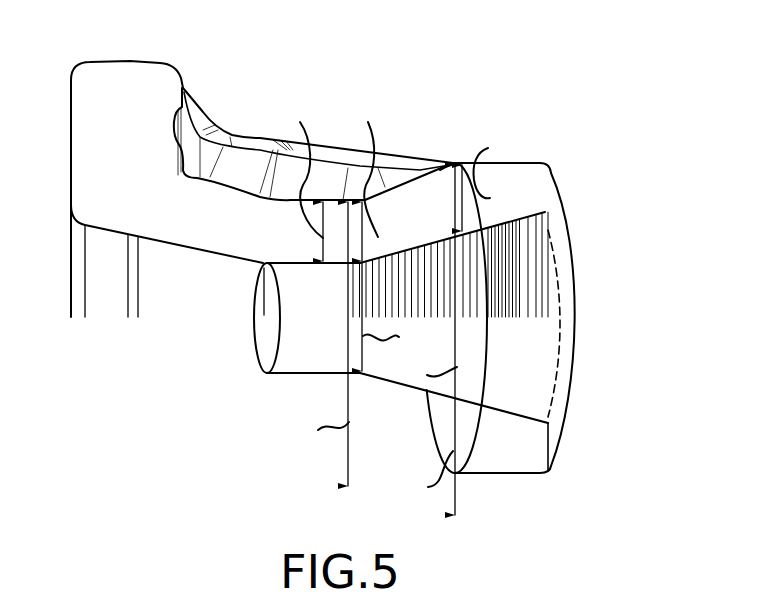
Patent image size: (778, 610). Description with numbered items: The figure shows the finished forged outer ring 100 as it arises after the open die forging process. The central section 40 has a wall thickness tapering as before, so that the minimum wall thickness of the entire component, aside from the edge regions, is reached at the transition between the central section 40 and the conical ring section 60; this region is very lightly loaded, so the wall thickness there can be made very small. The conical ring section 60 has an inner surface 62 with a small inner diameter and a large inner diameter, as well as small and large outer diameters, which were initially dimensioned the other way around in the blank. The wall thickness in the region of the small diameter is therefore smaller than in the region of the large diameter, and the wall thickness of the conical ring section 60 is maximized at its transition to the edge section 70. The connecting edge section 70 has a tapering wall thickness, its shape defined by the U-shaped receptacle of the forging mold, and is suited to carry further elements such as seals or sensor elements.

The forged outer ring 100 is at (258, 49).
The central section 40 is at (255, 243).
The conical ring section 60 is at (394, 231).
The inner surface 62 is at (450, 258).
The edge section 70 is at (529, 202).